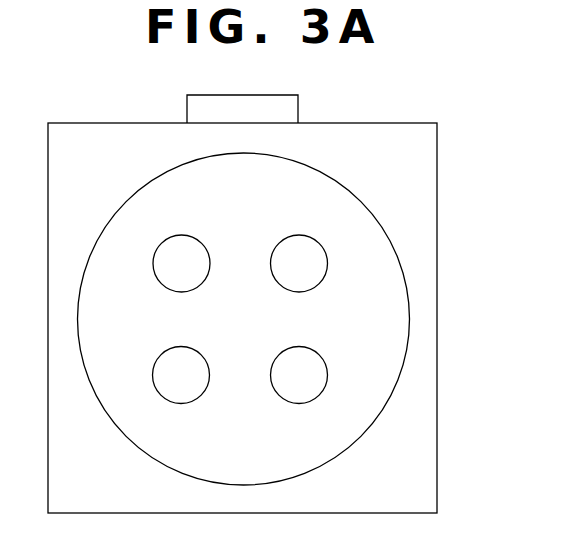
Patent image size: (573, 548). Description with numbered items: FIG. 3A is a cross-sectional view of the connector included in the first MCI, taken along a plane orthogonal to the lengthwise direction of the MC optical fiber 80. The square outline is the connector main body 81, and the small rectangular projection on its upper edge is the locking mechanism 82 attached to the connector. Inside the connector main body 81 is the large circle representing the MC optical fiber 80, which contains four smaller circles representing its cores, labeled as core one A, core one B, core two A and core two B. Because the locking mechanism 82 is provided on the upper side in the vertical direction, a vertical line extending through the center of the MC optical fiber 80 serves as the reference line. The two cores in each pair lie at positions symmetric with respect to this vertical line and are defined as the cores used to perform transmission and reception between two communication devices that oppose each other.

The MC optical fiber 80 is at (357, 197).
The connector main body 81 is at (438, 236).
The locking mechanism 82 is at (298, 105).